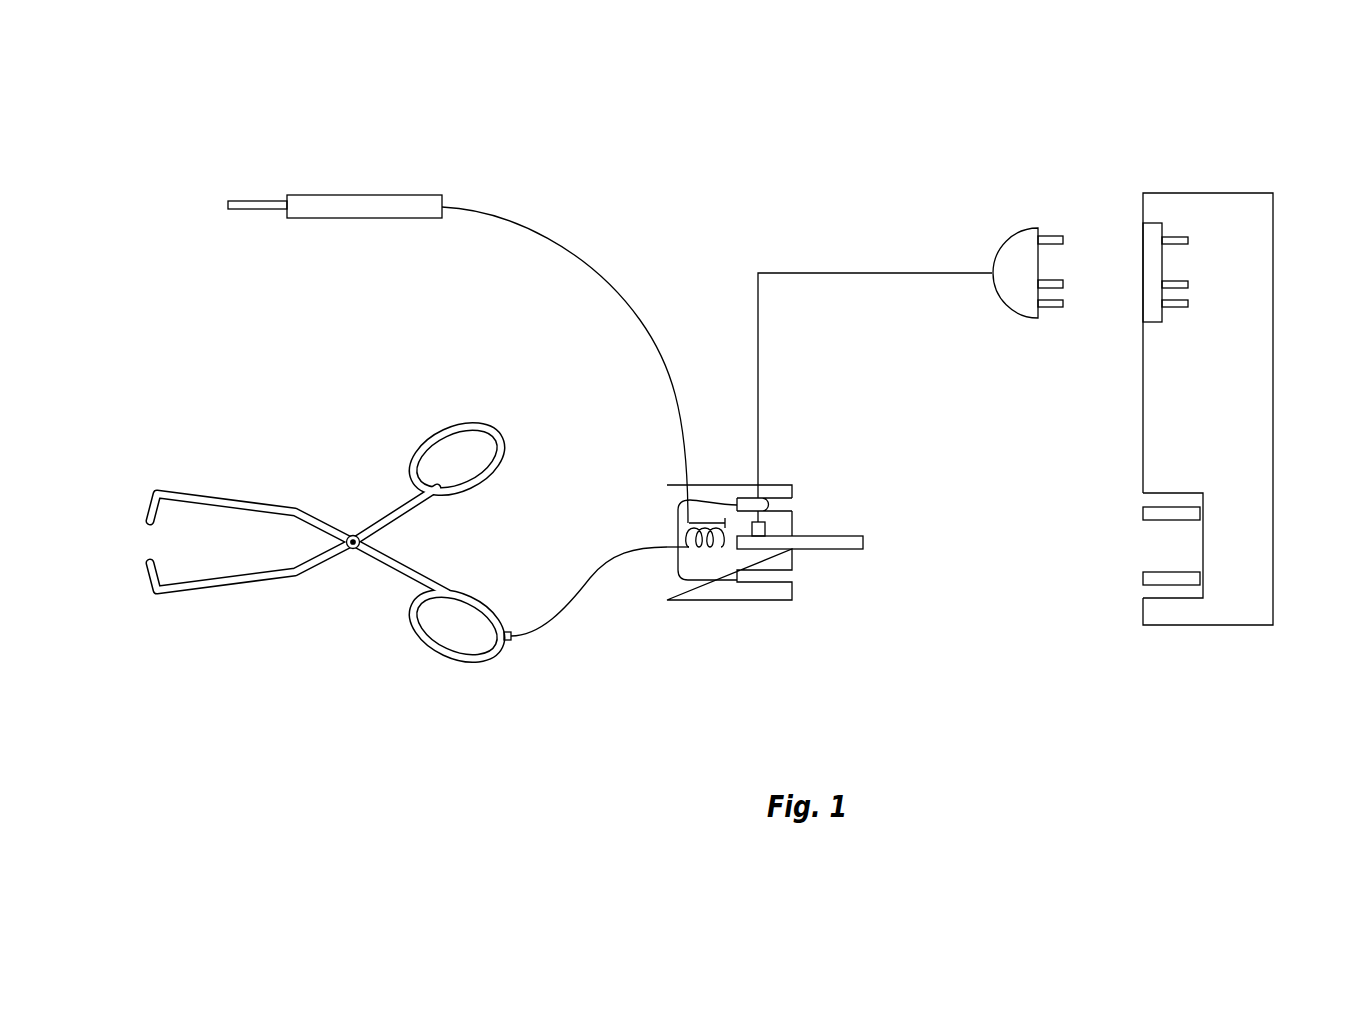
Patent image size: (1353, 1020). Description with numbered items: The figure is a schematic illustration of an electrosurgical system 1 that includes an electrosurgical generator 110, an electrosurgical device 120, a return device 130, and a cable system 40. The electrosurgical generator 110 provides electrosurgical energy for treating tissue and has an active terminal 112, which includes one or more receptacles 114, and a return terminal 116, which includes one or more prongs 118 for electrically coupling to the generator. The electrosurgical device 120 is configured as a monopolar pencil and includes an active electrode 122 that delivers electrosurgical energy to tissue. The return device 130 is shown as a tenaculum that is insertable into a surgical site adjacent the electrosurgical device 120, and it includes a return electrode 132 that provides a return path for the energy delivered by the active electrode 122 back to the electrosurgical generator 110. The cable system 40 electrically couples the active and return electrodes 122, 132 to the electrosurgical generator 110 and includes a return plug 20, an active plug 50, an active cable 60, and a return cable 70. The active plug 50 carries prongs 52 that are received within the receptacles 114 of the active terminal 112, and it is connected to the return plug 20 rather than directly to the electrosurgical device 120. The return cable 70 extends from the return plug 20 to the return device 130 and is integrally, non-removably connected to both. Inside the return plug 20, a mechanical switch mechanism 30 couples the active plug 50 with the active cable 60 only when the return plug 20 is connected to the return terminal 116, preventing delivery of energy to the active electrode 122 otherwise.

The electrosurgical system 1 is at (675, 67).
The return plug 20 is at (772, 604).
The mechanical switch mechanism 30 is at (728, 558).
The cable system 40 is at (731, 418).
The active plug 50 is at (1005, 232).
The prongs 52 is at (1063, 303).
The active cable 60 is at (535, 225).
The return cable 70 is at (590, 578).
The electrosurgical generator 110 is at (1227, 432).
The active terminal 112 is at (1143, 254).
The receptacles 114 is at (1188, 303).
The return terminal 116 is at (1203, 545).
The prongs 118 is at (1143, 578).
The electrosurgical device 120 is at (375, 192).
The active electrode 122 is at (263, 201).
The return device 130 is at (384, 568).
The return electrode 132 is at (146, 517).